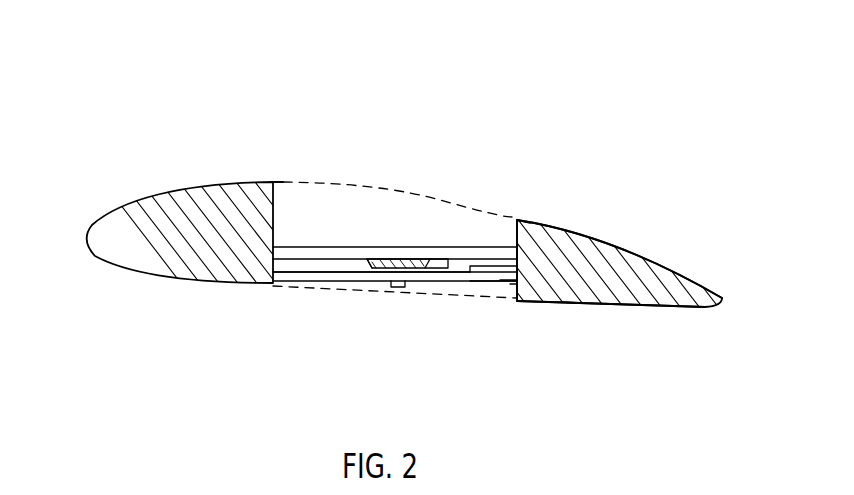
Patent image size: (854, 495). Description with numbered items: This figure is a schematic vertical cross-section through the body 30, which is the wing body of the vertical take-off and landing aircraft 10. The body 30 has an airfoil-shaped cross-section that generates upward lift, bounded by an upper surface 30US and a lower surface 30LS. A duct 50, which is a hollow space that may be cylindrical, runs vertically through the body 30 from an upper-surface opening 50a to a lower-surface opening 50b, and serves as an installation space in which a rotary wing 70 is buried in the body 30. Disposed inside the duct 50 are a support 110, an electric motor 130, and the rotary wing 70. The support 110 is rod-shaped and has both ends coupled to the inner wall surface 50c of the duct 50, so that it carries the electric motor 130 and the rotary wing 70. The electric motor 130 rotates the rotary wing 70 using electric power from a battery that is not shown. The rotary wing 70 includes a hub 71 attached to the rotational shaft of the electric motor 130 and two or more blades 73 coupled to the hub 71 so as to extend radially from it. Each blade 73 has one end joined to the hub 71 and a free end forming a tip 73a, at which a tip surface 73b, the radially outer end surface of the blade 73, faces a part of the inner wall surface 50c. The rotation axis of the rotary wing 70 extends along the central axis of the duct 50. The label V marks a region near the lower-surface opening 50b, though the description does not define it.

The vertical take-off and landing aircraft 10 is at (402, 76).
The body 30 is at (608, 243).
The upper surface 30US is at (657, 251).
The lower surface 30LS is at (648, 308).
The duct 50 is at (516, 238).
The upper-surface opening 50a is at (517, 220).
The lower-surface opening 50b is at (513, 291).
The inner wall surface 50c is at (504, 290).
The gap V is at (570, 304).
The rotary wing 70 is at (363, 268).
The hub 71 is at (400, 288).
The blade 73 is at (427, 282).
The tip 73a is at (480, 283).
The tip surface 73b is at (503, 280).
The support 110 is at (400, 258).
The electric motor 130 is at (450, 264).